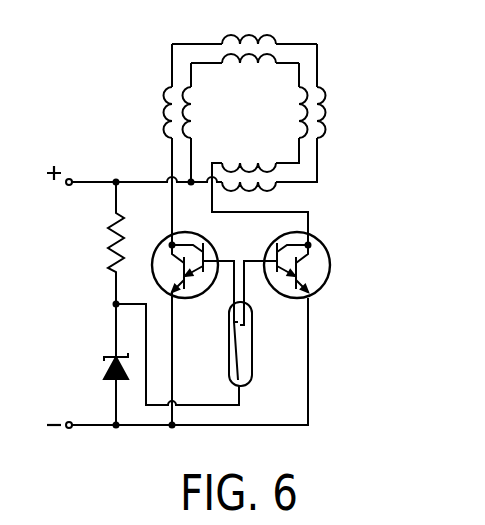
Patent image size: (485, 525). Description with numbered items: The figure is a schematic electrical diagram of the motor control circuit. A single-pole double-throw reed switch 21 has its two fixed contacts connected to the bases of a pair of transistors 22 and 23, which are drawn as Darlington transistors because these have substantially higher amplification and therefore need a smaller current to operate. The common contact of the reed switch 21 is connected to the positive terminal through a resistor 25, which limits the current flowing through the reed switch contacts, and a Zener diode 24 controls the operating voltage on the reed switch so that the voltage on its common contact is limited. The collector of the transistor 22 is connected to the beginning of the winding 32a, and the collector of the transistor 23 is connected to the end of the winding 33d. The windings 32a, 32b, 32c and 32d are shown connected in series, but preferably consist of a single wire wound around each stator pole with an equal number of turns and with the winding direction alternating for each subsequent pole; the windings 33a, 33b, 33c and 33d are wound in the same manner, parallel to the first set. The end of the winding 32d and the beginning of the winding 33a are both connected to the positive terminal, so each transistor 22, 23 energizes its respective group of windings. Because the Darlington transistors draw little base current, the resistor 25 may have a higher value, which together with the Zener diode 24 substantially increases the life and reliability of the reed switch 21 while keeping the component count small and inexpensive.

The reed switch 21 is at (252, 353).
The transistor 22 is at (151, 275).
The transistor 23 is at (330, 278).
The Zener diode 24 is at (103, 356).
The resistor 25 is at (108, 245).
The winding 32a is at (165, 139).
The winding 32b is at (222, 38).
The winding 32c is at (327, 134).
The winding 32d is at (279, 188).
The winding 33a is at (176, 83).
The winding 33b is at (276, 52).
The winding 33c is at (310, 88).
The winding 33d is at (277, 167).